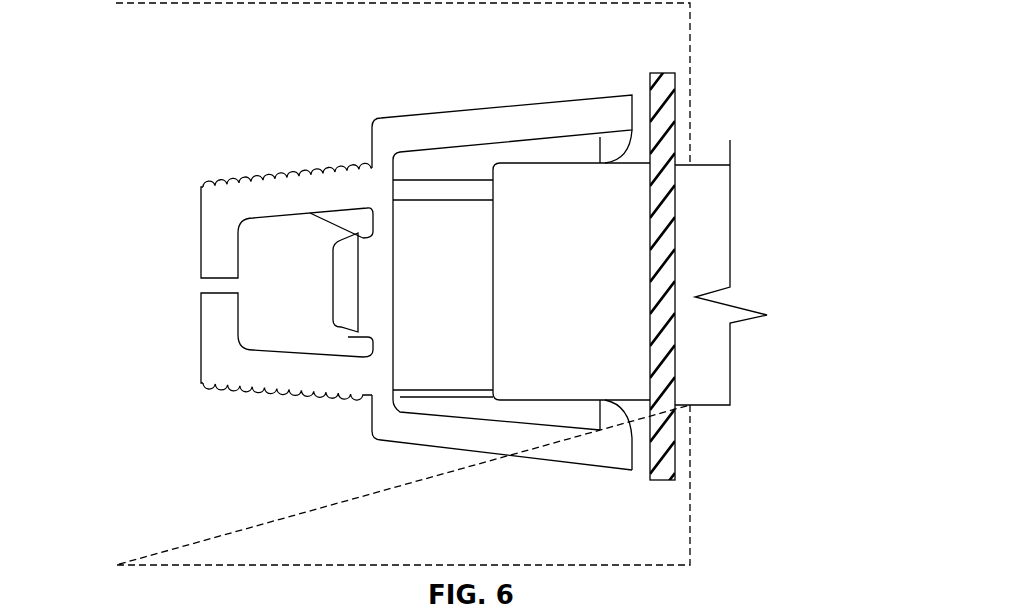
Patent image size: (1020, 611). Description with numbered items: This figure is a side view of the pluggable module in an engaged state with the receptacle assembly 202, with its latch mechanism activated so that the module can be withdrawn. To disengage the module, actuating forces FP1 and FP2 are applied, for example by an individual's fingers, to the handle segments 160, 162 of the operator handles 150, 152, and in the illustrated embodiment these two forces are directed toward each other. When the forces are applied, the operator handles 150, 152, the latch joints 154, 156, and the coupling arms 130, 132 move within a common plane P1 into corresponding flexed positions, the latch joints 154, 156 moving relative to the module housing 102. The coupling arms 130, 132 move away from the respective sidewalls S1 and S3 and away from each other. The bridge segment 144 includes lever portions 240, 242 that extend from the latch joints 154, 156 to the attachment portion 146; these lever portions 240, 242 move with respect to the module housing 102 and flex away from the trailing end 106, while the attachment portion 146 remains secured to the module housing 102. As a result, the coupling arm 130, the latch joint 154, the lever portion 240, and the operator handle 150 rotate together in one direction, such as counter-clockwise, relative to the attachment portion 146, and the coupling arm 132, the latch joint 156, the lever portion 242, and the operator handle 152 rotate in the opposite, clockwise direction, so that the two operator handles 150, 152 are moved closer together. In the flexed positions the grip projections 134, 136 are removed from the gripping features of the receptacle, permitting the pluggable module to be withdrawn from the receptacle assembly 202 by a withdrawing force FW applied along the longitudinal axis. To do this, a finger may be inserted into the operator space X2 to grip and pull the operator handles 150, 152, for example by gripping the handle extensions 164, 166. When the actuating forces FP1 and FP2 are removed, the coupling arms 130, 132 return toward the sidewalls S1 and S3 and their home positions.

The module housing 102 is at (440, 183).
The trailing end 106 is at (389, 342).
The coupling arm 130 is at (580, 95).
The coupling arm 132 is at (503, 450).
The grip projection 134 is at (613, 143).
The grip projection 136 is at (613, 422).
The bridge segment 144 is at (378, 226).
The attachment portion 146 is at (372, 272).
The operator handle 150 is at (217, 182).
The operator handle 152 is at (207, 385).
The latch joint 154 is at (357, 148).
The latch joint 156 is at (350, 421).
The handle segment 160 is at (257, 220).
The handle segment 162 is at (313, 353).
The handle extension 164 is at (200, 223).
The handle extension 166 is at (200, 337).
The receptacle assembly 202 is at (720, 135).
The lever portion 240 is at (310, 213).
The lever portion 242 is at (350, 338).
The operator space X2 is at (226, 283).
The sidewall S1 is at (413, 163).
The sidewall S3 is at (442, 402).
The withdrawing force FW is at (47, 115).
The actuating force FP1 is at (287, 99).
The actuating force FP2 is at (278, 445).
The plane P1 is at (690, 40).